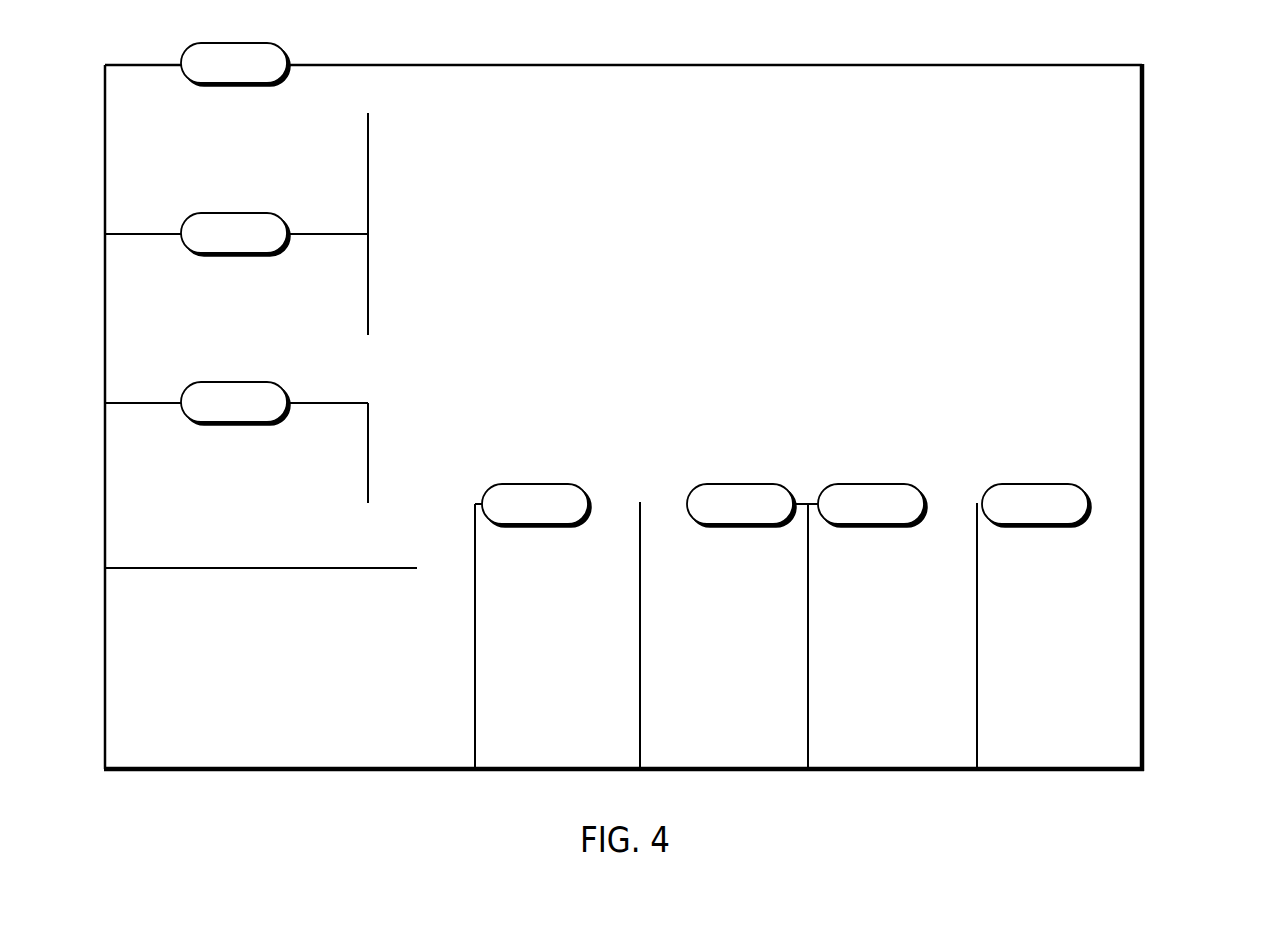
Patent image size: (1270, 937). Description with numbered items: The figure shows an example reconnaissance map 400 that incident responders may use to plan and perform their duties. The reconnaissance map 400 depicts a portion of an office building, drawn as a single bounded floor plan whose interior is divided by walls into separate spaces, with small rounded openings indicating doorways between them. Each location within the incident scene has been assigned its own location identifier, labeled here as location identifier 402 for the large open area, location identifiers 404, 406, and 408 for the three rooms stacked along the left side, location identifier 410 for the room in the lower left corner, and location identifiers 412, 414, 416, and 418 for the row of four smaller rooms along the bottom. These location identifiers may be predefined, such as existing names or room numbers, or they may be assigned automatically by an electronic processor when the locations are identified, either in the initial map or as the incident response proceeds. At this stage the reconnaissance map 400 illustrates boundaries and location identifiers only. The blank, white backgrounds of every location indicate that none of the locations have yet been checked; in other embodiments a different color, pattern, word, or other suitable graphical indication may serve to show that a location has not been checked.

The reconnaissance map 400 is at (1172, 91).
The location identifier 402 is at (750, 320).
The location identifier 404 is at (255, 185).
The location identifier 406 is at (255, 341).
The location identifier 408 is at (255, 497).
The location identifier 410 is at (282, 669).
The location identifier 412 is at (572, 649).
The location identifier 414 is at (742, 649).
The location identifier 416 is at (907, 649).
The location identifier 418 is at (1079, 649).